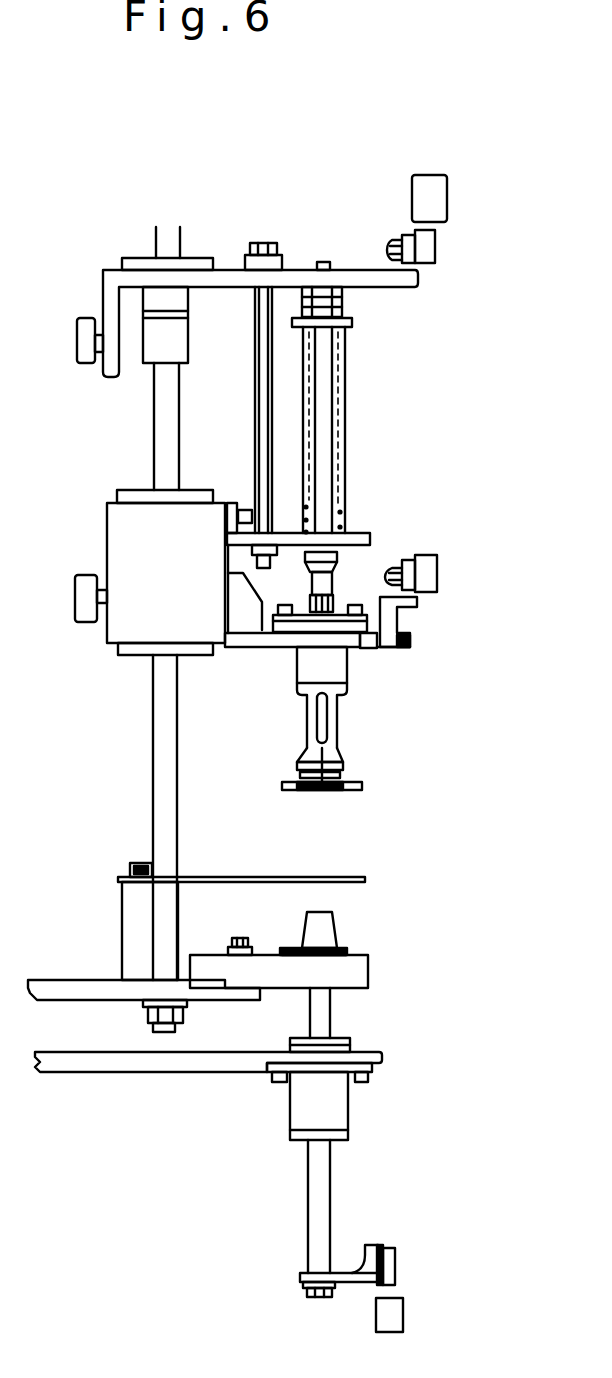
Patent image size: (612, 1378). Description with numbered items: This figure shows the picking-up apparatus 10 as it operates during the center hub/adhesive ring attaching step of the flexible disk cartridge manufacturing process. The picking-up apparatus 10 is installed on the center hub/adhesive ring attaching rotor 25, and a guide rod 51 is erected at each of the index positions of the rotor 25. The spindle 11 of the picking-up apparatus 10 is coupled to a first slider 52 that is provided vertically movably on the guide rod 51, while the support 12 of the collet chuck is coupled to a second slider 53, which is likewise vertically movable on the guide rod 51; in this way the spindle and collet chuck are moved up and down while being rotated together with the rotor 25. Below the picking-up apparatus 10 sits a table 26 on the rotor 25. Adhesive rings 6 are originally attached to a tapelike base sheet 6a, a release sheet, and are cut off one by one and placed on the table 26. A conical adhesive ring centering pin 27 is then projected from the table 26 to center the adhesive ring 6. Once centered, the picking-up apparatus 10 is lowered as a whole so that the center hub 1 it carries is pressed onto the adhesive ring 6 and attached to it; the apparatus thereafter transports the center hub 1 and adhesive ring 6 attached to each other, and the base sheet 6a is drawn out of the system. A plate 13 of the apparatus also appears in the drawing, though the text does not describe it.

The center hub 1 is at (358, 782).
The adhesive ring 6 is at (343, 950).
The base sheet 6a is at (353, 955).
The picking-up apparatus 10 is at (367, 703).
The spindle 11 is at (337, 590).
The support 12 is at (342, 748).
The support plate 13 is at (268, 647).
The center hub/adhesive ring attaching rotor 25 is at (62, 953).
The table 26 is at (368, 972).
The adhesive ring centering pin 27 is at (325, 923).
The guide rod 51 is at (153, 743).
The first slider 52 is at (188, 347).
The second slider 53 is at (107, 535).